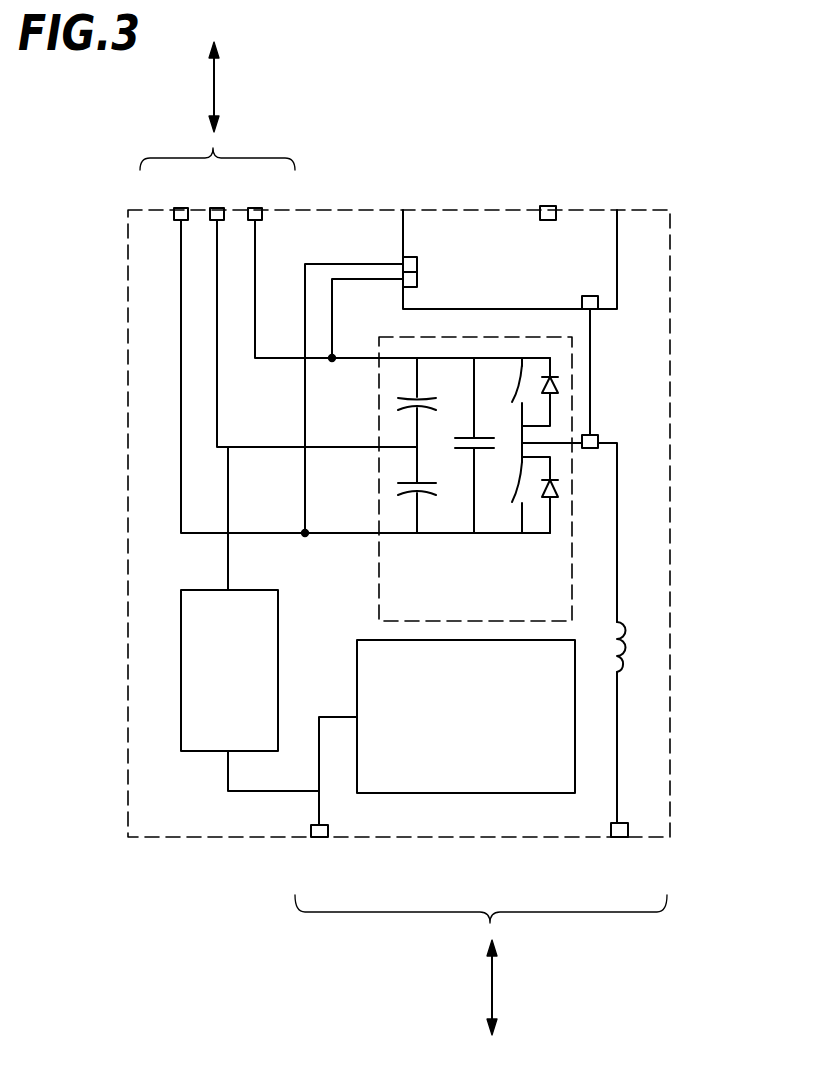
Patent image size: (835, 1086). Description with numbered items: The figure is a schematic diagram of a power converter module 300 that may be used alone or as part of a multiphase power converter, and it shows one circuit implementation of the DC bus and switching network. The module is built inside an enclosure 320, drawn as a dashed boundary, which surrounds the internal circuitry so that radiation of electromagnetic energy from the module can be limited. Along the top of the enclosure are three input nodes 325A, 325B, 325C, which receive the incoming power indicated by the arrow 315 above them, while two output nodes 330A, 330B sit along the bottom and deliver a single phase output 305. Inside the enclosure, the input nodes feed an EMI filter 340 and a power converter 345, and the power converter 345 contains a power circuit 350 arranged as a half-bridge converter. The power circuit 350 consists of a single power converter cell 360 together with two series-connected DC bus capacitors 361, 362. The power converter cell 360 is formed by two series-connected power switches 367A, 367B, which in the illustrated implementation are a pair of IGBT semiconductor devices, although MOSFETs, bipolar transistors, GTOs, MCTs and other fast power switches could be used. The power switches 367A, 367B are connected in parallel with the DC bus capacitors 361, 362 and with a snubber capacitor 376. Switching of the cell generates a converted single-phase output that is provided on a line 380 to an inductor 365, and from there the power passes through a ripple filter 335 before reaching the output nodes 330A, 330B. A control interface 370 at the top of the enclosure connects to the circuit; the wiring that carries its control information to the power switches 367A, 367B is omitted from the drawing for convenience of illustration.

The power converter module 300 is at (586, 106).
The single phase output 305 is at (494, 990).
The AC input 315 is at (218, 90).
The enclosure 320 is at (128, 430).
The input node 325A is at (180, 208).
The input node 325B is at (254, 208).
The input node 325C is at (217, 208).
The output node 330A is at (320, 839).
The output node 330B is at (618, 838).
The ripple filter 335 is at (577, 740).
The EMI filter 340 is at (181, 722).
The power converter 345 is at (585, 590).
The power circuit 350 is at (550, 573).
The power converter cell 360 is at (550, 538).
The DC bus capacitor 361 is at (399, 397).
The DC bus capacitor 362 is at (400, 490).
The inductor 365 is at (633, 648).
The power switch 367A is at (572, 366).
The power switch 367B is at (572, 469).
The control interface 370 is at (580, 210).
The snubber capacitor 376 is at (490, 432).
The line 380 is at (572, 432).